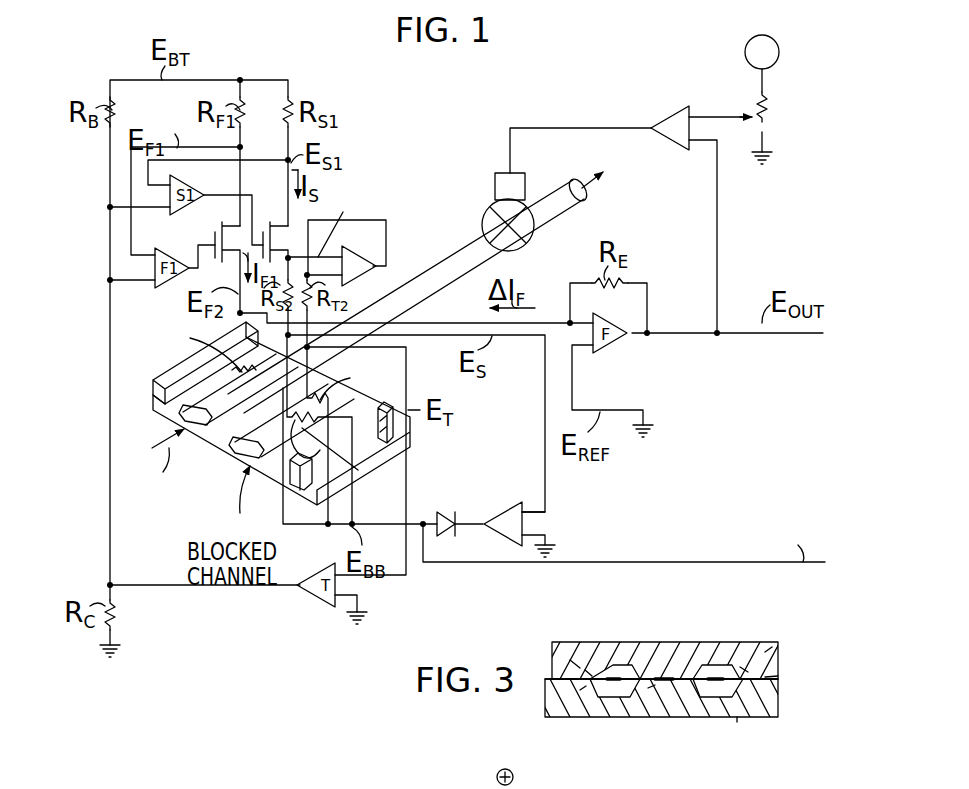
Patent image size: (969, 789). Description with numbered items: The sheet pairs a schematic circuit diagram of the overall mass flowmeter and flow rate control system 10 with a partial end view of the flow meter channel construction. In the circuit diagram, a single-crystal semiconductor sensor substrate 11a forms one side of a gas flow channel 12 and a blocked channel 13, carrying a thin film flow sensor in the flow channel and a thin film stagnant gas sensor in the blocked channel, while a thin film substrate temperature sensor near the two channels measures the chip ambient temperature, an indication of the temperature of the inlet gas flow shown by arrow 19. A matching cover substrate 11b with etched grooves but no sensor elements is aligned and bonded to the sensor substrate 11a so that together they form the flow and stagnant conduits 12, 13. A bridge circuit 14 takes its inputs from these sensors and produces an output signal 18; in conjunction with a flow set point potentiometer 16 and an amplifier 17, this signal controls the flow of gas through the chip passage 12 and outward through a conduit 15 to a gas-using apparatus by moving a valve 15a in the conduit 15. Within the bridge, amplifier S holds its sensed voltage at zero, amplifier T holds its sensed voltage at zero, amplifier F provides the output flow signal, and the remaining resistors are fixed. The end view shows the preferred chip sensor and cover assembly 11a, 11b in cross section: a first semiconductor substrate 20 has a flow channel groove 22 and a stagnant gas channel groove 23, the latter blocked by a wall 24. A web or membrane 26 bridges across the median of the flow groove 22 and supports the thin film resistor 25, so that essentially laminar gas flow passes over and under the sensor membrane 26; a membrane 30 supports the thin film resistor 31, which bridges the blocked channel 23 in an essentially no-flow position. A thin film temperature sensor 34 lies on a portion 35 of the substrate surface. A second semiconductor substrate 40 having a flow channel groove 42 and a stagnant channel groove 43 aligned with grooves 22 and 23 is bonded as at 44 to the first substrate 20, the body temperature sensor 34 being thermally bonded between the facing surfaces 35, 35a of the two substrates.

In FIG. 1, the flowmeter and control system 10 is at (578, 490).
In FIG. 1, the sensor substrate 11a is at (152, 396).
In FIG. 3, the sensor substrate 11a is at (545, 698).
In FIG. 1, the cover substrate 11b is at (152, 380).
In FIG. 3, the cover substrate 11b is at (550, 650).
In FIG. 1, the gas flow channel 12 is at (182, 425).
In FIG. 1, the blocked channel 13 is at (243, 458).
In FIG. 1, the bridge circuit 14 is at (362, 158).
In FIG. 1, the conduit 15 is at (455, 250).
In FIG. 1, the valve 15a is at (494, 200).
In FIG. 1, the flow set point potentiometer 16 is at (768, 136).
In FIG. 1, the amplifier 17 is at (680, 150).
In FIG. 1, the output signal 18 is at (717, 228).
In FIG. 1, the inlet gas flow 19 is at (150, 491).
In FIG. 3, the semiconductor substrate 20 is at (737, 718).
In FIG. 3, the flow channel groove 22 is at (690, 688).
In FIG. 3, the stagnant gas channel groove 23 is at (587, 688).
In FIG. 3, the wall 24 is at (621, 667).
In FIG. 3, the thin film resistor 25 is at (722, 672).
In FIG. 3, the web 26 is at (743, 667).
In FIG. 3, the membrane 30 is at (627, 688).
In FIG. 3, the thin film resistor 31 is at (590, 672).
In FIG. 3, the thin film temperature sensor 34 is at (660, 670).
In FIG. 3, the surface portion 35 is at (651, 687).
In FIG. 3, the facing surface 35a is at (690, 676).
In FIG. 3, the second semiconductor substrate 40 is at (772, 647).
In FIG. 3, the flow channel groove 42 is at (707, 663).
In FIG. 3, the stagnant channel groove 43 is at (580, 663).
In FIG. 3, the bond 44 is at (765, 677).